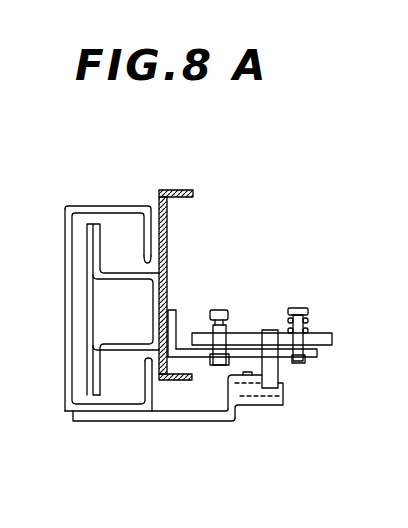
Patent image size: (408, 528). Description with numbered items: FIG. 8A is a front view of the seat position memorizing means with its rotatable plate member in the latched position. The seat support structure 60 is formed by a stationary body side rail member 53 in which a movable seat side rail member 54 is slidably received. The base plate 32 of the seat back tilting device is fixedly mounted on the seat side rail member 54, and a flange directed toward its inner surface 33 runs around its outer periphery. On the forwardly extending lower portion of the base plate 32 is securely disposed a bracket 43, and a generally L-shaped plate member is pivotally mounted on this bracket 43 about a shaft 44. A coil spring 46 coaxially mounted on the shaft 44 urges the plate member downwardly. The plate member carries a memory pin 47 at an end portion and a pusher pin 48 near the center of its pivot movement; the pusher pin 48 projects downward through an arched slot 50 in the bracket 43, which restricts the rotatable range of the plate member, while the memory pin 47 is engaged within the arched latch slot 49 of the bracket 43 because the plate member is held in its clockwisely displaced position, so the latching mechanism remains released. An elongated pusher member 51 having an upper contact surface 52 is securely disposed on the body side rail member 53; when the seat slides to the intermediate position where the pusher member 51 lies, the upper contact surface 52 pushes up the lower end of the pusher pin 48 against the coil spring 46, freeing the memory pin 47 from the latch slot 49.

The base plate 32 is at (170, 264).
The inner surface 33 is at (167, 228).
The bracket 43 is at (187, 349).
The shaft 44 is at (303, 311).
The coil spring 46 is at (308, 334).
The memory pin 47 is at (220, 313).
The pusher pin 48 is at (270, 390).
The arched slot 49 is at (203, 358).
The arched slot 50 is at (281, 366).
The pusher member 51 is at (146, 426).
The upper contact surface 52 is at (240, 385).
The body side rail member 53 is at (65, 331).
The seat side rail member 54 is at (87, 256).
The seat support structure 60 is at (89, 284).